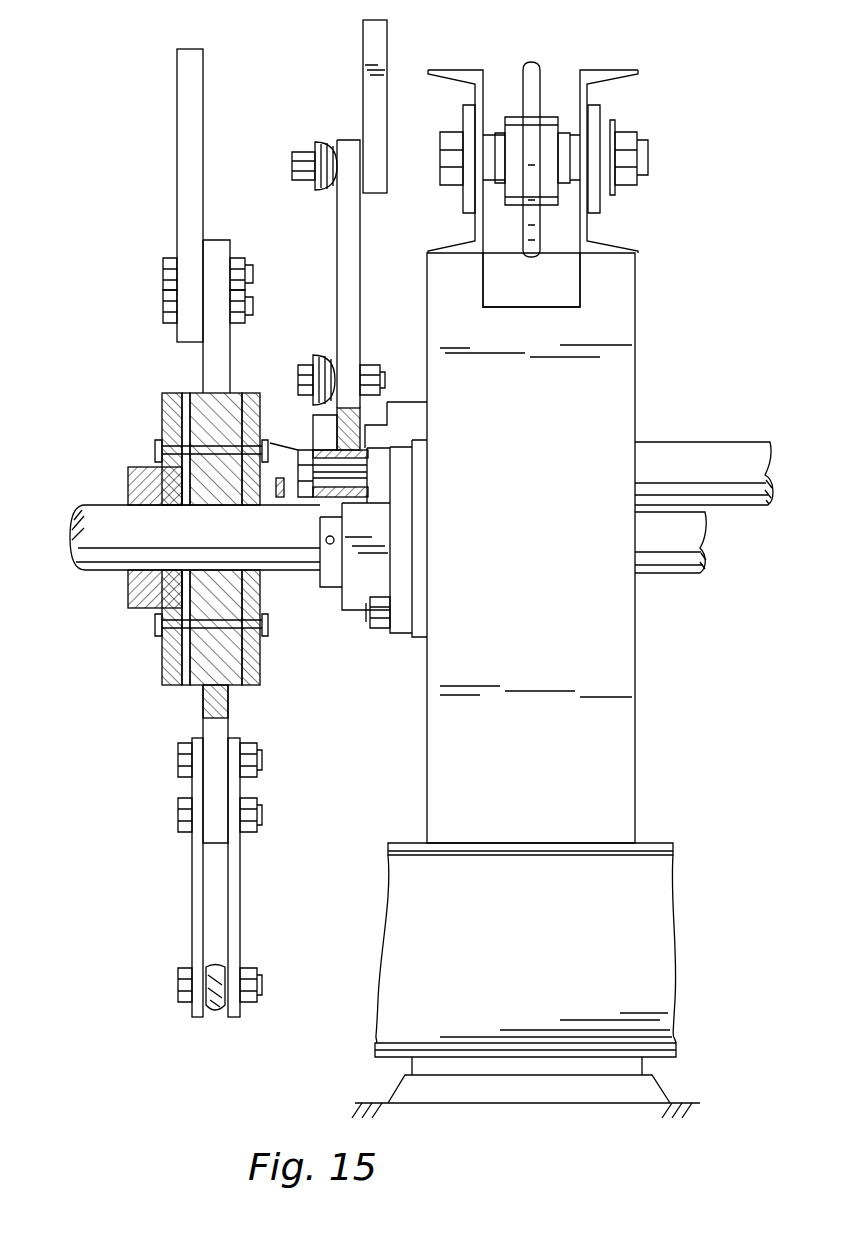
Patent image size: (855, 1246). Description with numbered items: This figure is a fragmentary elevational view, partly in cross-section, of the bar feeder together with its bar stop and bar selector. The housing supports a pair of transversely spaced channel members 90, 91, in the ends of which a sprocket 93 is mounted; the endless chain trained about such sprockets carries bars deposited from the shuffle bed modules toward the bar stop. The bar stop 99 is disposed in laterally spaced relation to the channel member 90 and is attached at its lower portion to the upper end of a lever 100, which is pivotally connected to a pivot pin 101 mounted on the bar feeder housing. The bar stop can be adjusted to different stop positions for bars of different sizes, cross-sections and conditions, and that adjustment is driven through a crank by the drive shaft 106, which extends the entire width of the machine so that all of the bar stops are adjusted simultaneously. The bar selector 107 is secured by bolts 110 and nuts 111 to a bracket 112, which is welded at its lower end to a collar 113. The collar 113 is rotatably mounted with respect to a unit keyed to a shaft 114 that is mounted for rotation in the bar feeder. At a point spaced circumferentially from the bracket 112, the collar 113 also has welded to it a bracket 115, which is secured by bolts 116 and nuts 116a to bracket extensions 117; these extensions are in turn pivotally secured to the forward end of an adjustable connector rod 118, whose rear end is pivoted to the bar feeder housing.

The channel member 90 is at (472, 90).
The channel member 91 is at (590, 100).
The sprocket 93 is at (540, 82).
The bar stop 99 is at (387, 50).
The lever 100 is at (358, 250).
The pivot pin 101 is at (313, 445).
The drive shaft 106 is at (685, 445).
The bar selector 107 is at (202, 152).
The bolts 110 is at (170, 262).
The nuts 111 is at (242, 258).
The bracket 112 is at (220, 352).
The collar 113 is at (232, 395).
The shaft 114 is at (100, 512).
The bracket 115 is at (203, 703).
The bolts 116 is at (178, 768).
The nuts 116a is at (246, 748).
The bracket extensions 117 is at (190, 882).
The connector rod 118 is at (215, 1015).